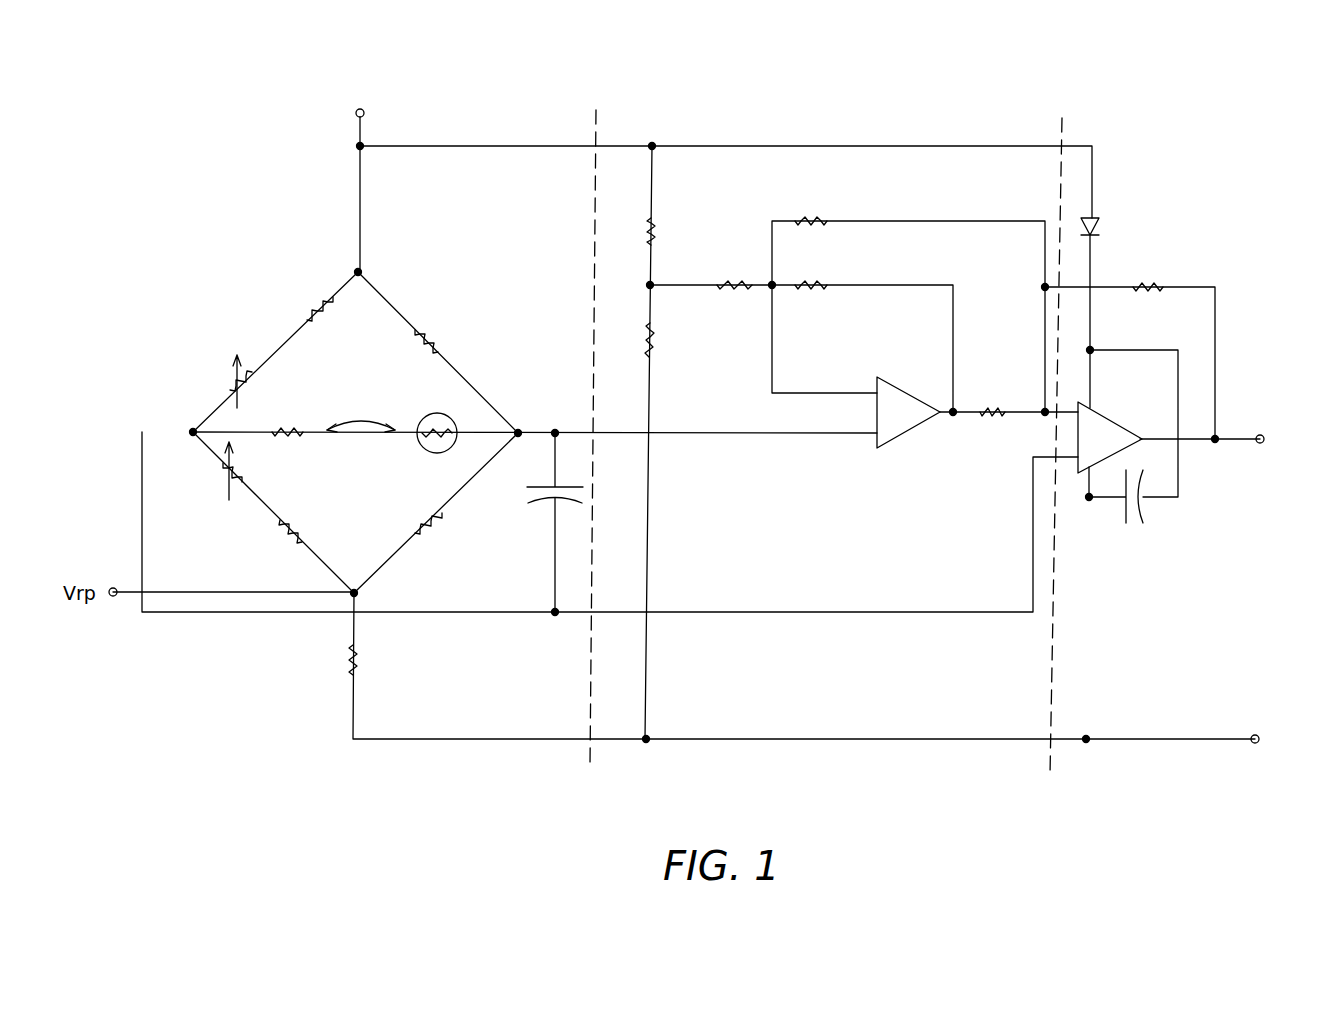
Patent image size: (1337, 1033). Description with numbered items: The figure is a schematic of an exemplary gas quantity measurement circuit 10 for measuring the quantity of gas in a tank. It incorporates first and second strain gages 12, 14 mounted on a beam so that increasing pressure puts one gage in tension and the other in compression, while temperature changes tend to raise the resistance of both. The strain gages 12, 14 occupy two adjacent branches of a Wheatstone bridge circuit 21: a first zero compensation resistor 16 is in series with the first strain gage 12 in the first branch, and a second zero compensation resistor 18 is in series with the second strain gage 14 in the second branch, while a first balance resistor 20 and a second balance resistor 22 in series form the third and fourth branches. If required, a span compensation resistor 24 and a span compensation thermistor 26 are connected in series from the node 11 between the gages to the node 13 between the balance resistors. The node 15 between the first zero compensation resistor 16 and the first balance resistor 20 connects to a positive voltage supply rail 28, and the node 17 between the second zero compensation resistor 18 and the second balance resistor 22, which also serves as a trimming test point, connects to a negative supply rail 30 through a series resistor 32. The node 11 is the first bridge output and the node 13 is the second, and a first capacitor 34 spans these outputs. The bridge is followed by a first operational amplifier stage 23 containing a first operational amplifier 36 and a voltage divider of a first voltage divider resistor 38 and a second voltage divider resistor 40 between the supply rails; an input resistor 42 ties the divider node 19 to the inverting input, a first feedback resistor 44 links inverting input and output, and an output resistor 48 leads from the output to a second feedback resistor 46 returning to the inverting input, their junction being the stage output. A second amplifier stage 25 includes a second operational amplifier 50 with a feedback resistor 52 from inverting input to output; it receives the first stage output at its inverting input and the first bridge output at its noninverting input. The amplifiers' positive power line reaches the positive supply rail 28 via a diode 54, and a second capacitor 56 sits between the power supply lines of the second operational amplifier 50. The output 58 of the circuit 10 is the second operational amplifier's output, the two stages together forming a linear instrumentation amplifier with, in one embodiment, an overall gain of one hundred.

The gas quantity measurement circuit 10 is at (1045, 92).
The node 11 is at (193, 430).
The first strain gage 12 is at (238, 361).
The node 13 is at (520, 430).
The second strain gage 14 is at (228, 490).
The node 15 is at (360, 270).
The first zero compensation resistor 16 is at (306, 320).
The node 17 is at (358, 596).
The second zero compensation resistor 18 is at (298, 545).
The node 19 is at (652, 283).
The first balance resistor 20 is at (438, 347).
The Wheatstone bridge circuit 21 is at (482, 712).
The second balance resistor 22 is at (418, 534).
The first operational amplifier stage 23 is at (849, 712).
The span compensation resistor 24 is at (276, 438).
The second amplifier stage 25 is at (1180, 712).
The span compensation thermistor 26 is at (424, 446).
The positive voltage supply rail 28 is at (356, 118).
The negative supply rail 30 is at (1255, 744).
The series resistor 32 is at (358, 668).
The first capacitor 34 is at (530, 500).
The first operational amplifier 36 is at (928, 420).
The first voltage divider resistor 38 is at (655, 238).
The second voltage divider resistor 40 is at (655, 343).
The input resistor 42 is at (733, 293).
The first feedback resistor 44 is at (812, 292).
The second feedback resistor 46 is at (815, 228).
The output resistor 48 is at (990, 418).
The second operational amplifier 50 is at (1118, 426).
The feedback resistor 52 is at (1147, 294).
The diode 54 is at (1092, 214).
The second capacitor 56 is at (1140, 508).
The output 58 is at (1255, 442).